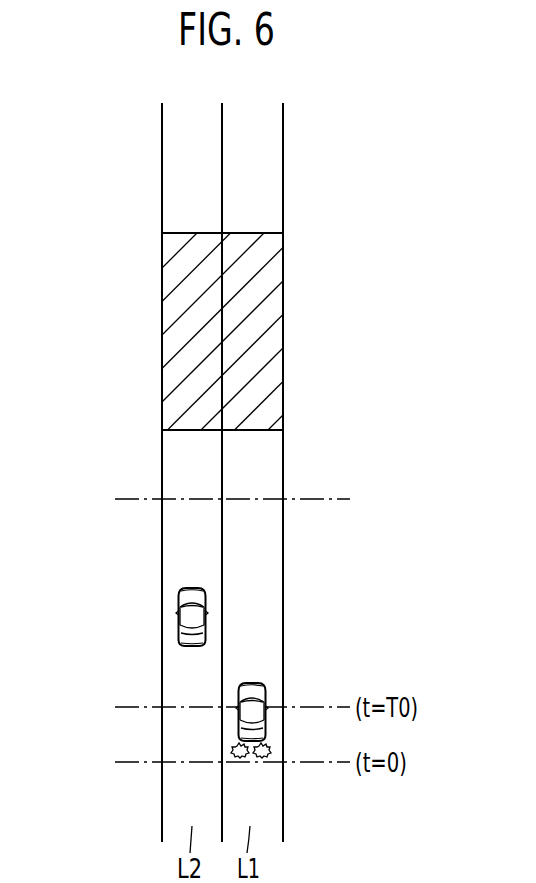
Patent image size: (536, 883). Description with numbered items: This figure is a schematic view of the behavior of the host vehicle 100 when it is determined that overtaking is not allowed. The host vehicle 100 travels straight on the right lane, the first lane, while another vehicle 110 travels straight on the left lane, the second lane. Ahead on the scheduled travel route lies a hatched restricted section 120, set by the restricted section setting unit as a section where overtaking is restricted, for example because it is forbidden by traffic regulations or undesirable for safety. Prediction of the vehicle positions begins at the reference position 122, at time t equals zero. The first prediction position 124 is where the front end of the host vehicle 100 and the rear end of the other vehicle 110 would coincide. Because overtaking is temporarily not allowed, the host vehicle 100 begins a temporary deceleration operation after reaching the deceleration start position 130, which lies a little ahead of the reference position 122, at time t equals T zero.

The host vehicle 100 is at (258, 688).
The other vehicle 110 is at (178, 617).
The restricted section 120 is at (150, 235).
The reference position 122 is at (139, 764).
The first prediction position 124 is at (139, 501).
The deceleration start position 130 is at (139, 709).